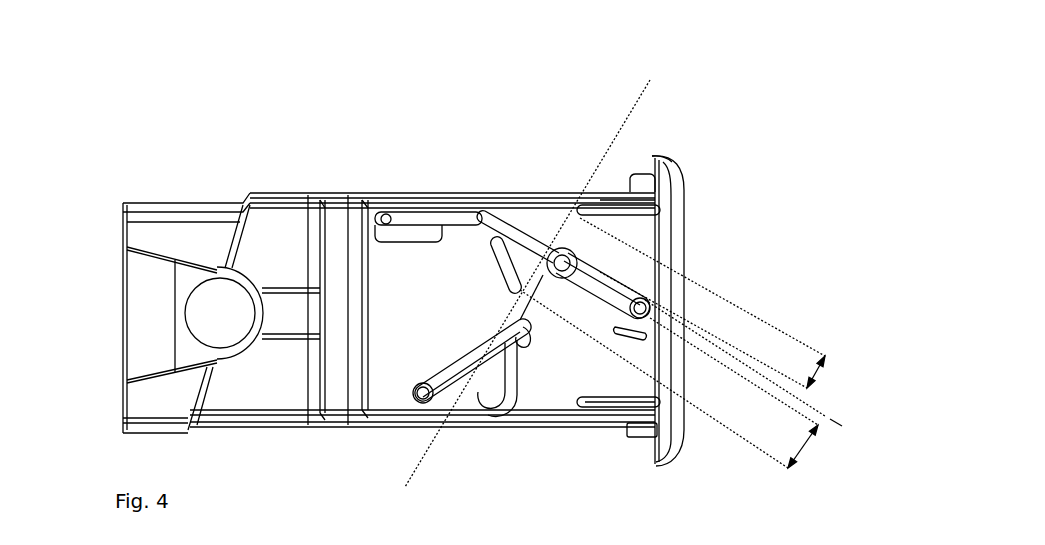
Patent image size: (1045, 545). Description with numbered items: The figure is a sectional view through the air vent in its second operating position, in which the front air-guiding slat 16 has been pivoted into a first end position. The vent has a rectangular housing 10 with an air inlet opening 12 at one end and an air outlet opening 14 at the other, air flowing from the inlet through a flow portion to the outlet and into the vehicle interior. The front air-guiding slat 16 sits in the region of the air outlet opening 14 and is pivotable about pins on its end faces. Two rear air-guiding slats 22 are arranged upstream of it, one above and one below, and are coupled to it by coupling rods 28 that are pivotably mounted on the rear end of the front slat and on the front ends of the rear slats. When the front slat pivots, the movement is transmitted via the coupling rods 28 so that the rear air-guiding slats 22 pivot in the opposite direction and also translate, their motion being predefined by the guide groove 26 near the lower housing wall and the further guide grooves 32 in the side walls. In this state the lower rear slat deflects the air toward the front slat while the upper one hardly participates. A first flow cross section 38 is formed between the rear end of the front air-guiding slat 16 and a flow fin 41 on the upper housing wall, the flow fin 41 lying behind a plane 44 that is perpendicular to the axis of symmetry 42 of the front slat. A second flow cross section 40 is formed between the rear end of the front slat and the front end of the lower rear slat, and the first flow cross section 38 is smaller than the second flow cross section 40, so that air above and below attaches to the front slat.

The housing 10 is at (342, 193).
The air inlet opening 12 is at (137, 226).
The air outlet opening 14 is at (675, 250).
The front air-guiding slat 16 is at (596, 283).
The rear air-guiding slats 22 is at (430, 222).
The guide groove 26 is at (400, 400).
The coupling rods 28 is at (545, 230).
The further guide grooves 32 is at (503, 275).
The first flow cross section 38 is at (818, 375).
The second flow cross section 40 is at (797, 447).
The flow fin 41 is at (608, 212).
The axis of symmetry 42 is at (830, 417).
The plane 44 is at (637, 104).